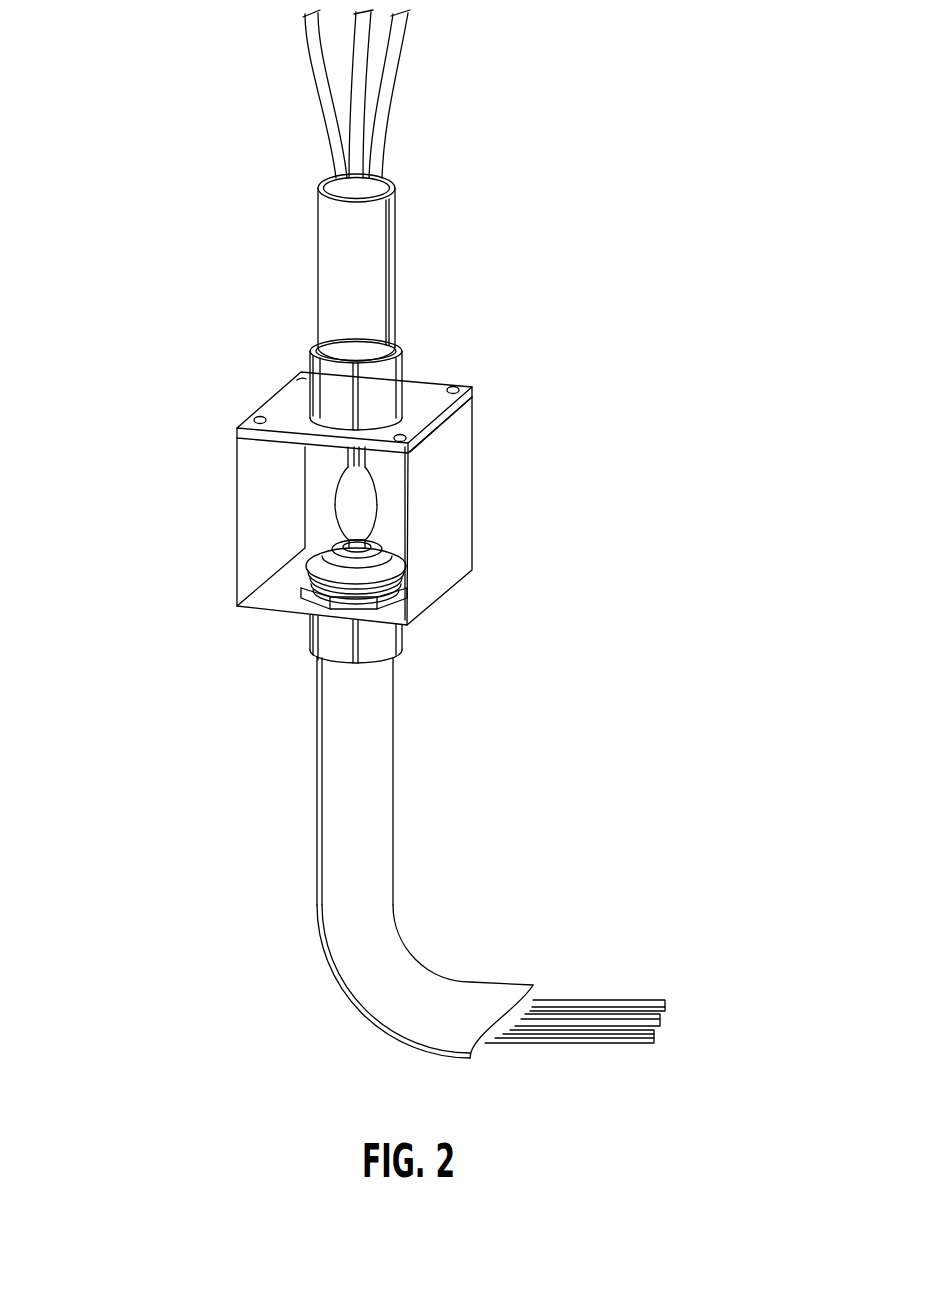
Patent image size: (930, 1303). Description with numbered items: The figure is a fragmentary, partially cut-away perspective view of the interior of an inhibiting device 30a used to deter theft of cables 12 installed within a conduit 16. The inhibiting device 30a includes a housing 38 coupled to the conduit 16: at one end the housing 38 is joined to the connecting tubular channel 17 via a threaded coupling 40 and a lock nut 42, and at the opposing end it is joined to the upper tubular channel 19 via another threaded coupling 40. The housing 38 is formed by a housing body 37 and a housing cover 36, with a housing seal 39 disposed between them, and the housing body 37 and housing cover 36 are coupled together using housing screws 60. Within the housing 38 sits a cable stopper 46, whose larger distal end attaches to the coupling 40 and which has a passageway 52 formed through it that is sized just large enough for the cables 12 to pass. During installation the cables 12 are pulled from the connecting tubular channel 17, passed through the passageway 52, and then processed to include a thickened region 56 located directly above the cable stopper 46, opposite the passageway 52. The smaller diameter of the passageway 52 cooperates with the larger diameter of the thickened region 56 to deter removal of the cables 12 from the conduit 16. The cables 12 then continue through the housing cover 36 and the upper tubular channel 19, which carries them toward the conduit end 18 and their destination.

The inhibiting device 30a is at (158, 134).
The cables 12 is at (372, 118).
The conduit 16 is at (394, 800).
The connecting tubular channel 17 is at (338, 977).
The first end of the conduit 18 is at (396, 222).
The upper tubular channel 19 is at (393, 275).
The housing cover 36 is at (288, 397).
The housing body 37 is at (457, 508).
The housing 38 is at (476, 457).
The housing seal 39 is at (443, 431).
The threaded coupling 40 is at (381, 376).
The lock nut 42 is at (302, 597).
The cable stopper 46 is at (335, 552).
The passageway 52 is at (340, 536).
The thickened region 56 is at (347, 482).
The housing screws 60 is at (456, 387).